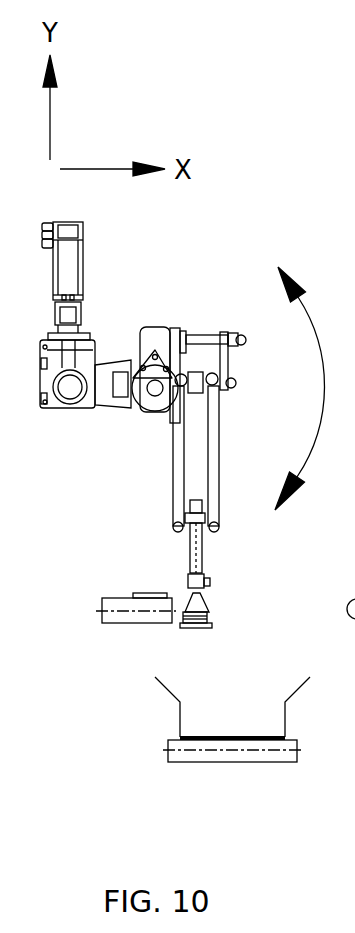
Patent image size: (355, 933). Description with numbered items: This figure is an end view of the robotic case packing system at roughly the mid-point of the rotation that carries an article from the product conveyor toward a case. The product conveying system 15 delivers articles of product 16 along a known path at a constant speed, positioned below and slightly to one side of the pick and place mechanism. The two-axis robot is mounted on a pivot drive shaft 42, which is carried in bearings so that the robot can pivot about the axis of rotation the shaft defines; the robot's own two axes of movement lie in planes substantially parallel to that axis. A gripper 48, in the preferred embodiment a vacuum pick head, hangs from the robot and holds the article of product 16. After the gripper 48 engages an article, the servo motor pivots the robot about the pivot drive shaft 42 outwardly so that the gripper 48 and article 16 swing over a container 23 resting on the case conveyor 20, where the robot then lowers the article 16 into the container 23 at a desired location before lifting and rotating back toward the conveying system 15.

The conveying system 15 is at (101, 647).
The article of product 16 is at (133, 595).
The case conveyor 20 is at (160, 777).
The container 23 is at (287, 718).
The pivot drive shaft 42 is at (137, 412).
The gripper 48 is at (208, 612).